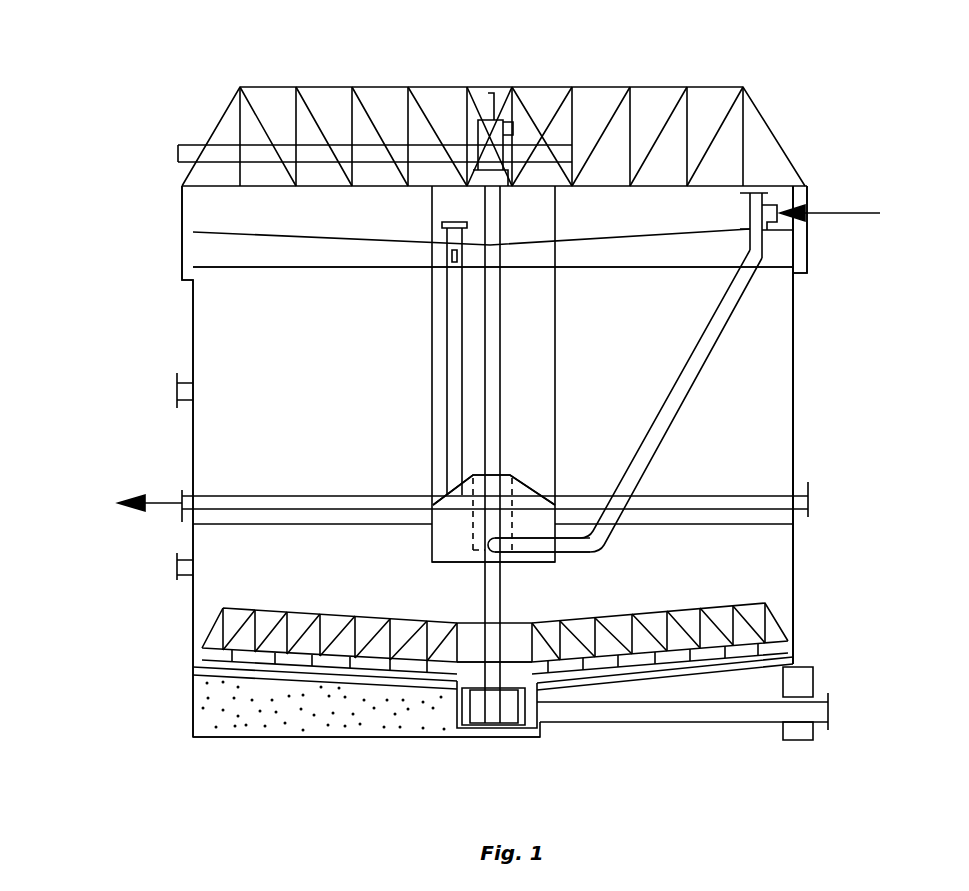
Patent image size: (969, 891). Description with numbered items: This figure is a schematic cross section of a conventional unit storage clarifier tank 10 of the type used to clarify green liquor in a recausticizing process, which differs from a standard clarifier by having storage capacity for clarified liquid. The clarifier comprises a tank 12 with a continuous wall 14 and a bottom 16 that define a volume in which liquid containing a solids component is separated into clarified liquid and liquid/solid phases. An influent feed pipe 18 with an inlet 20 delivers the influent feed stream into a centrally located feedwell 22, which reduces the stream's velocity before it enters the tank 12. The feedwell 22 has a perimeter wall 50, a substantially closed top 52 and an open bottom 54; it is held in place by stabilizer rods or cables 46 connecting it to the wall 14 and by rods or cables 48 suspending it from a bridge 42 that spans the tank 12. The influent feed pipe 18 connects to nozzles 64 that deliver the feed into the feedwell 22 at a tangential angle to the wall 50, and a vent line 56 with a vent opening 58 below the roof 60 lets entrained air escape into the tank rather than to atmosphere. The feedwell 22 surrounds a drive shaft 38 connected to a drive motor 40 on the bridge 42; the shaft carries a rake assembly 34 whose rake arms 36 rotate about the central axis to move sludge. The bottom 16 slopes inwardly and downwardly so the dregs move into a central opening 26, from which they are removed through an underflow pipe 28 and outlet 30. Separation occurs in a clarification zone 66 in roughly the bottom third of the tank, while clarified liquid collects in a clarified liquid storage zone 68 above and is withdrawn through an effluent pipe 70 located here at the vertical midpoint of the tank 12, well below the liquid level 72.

The unit storage clarifier tank 10 is at (130, 170).
The tank 12 is at (793, 430).
The continuous wall 14 is at (193, 430).
The bottom 16 is at (325, 679).
The influent feed pipe 18 is at (720, 325).
The inlet 20 is at (775, 212).
The feedwell 22 is at (525, 478).
The central opening 26 is at (458, 714).
The underflow pipe 28 is at (680, 712).
The outlet 30 is at (828, 712).
The rake assembly 34 is at (648, 605).
The rake arms 36 is at (225, 633).
The drive shaft 38 is at (500, 380).
The drive motor 40 is at (513, 130).
The bridge 42 is at (378, 86).
The stabilizer rods or cables 46 is at (215, 527).
The rods or cables 48 is at (554, 322).
The perimeter wall 50 is at (433, 540).
The substantially closed top 52 is at (535, 488).
The open bottom 54 is at (455, 567).
The vent line 56 is at (455, 310).
The vent opening 58 is at (445, 255).
The roof 60 is at (230, 232).
The nozzles 64 is at (538, 547).
The clarification zone 66 is at (493, 555).
The clarified liquid storage zone 68 is at (493, 326).
The effluent pipe 70 is at (218, 497).
The level 72 is at (244, 266).